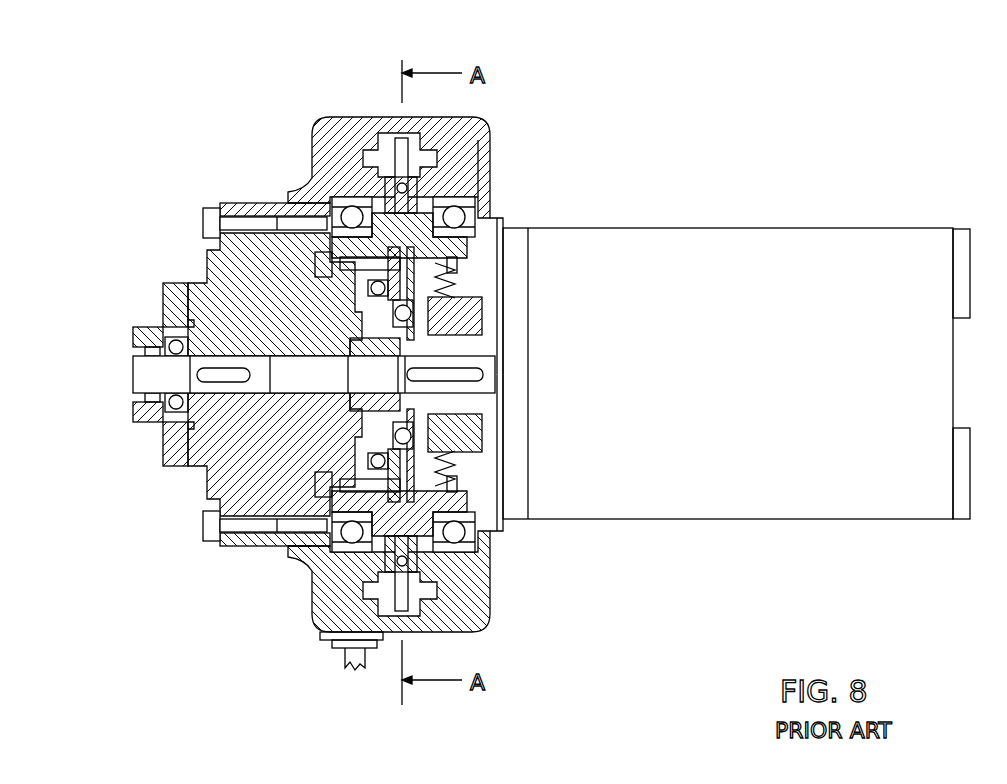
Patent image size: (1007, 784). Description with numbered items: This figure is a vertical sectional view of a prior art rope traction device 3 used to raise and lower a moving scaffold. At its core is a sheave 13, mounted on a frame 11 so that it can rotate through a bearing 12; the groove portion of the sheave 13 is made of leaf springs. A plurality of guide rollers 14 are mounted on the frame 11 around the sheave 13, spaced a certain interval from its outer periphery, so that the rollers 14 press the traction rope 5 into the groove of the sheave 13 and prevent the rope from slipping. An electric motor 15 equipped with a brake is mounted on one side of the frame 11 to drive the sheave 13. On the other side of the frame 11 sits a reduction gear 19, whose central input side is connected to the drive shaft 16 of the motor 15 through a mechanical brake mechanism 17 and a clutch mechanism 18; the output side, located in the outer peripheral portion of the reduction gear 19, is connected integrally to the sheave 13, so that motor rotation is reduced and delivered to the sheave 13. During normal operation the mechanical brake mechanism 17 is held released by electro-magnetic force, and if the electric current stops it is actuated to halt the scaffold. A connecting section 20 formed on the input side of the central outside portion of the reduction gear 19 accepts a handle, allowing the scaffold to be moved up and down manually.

The rope traction device 3 is at (655, 118).
The traction rope 5 is at (362, 188).
The frame 11 is at (485, 125).
The bearing 12 is at (305, 178).
The sheave 13 is at (455, 165).
The guide roller 14 is at (398, 140).
The electric motor 15 is at (887, 257).
The drive shaft 16 is at (503, 392).
The mechanical brake mechanism 17 is at (458, 432).
The clutch mechanism 18 is at (308, 566).
The reduction gear 19 is at (228, 270).
The connecting section 20 is at (135, 352).